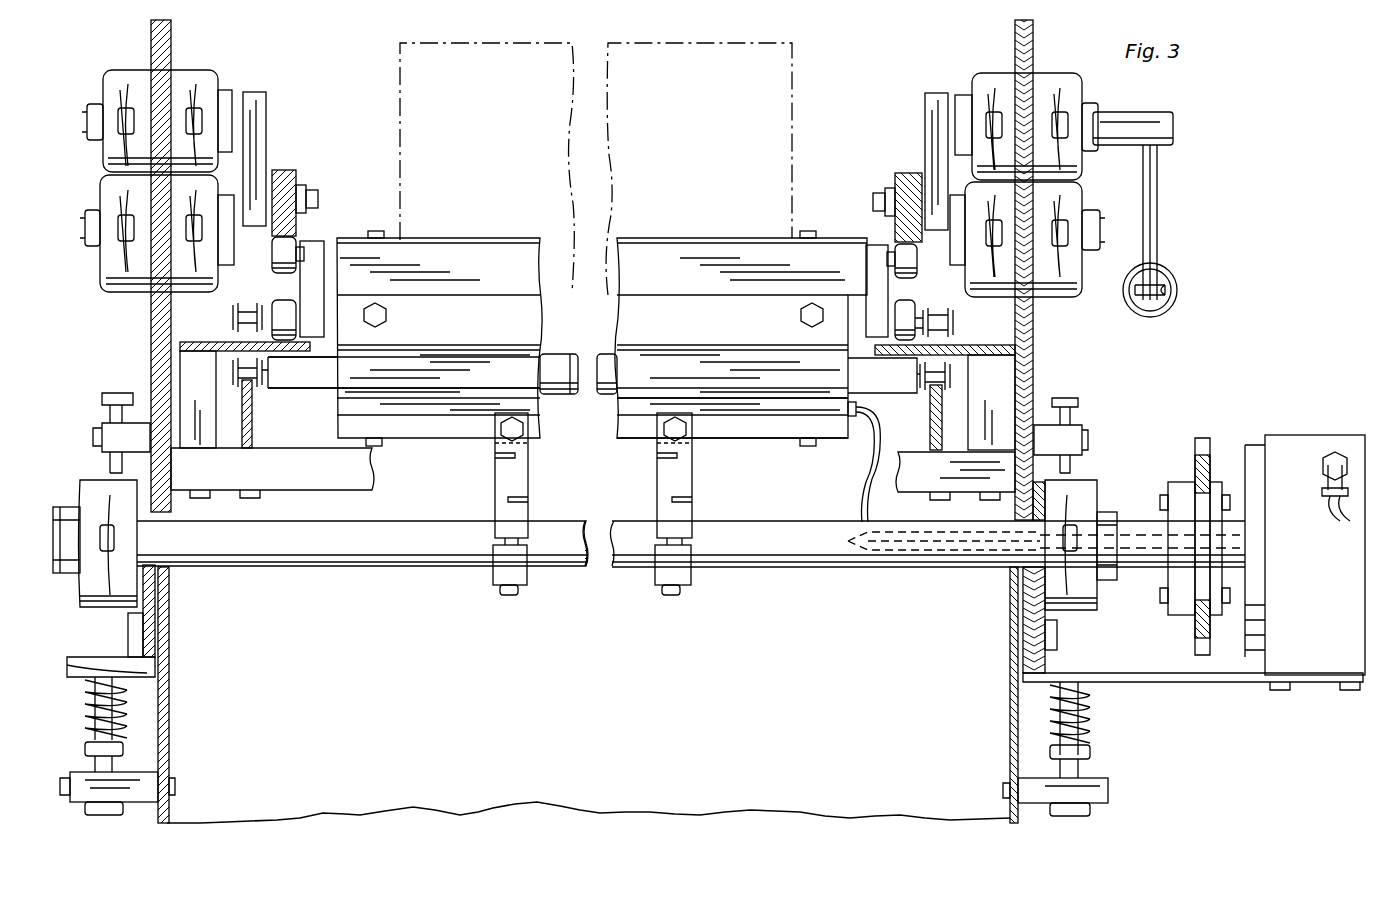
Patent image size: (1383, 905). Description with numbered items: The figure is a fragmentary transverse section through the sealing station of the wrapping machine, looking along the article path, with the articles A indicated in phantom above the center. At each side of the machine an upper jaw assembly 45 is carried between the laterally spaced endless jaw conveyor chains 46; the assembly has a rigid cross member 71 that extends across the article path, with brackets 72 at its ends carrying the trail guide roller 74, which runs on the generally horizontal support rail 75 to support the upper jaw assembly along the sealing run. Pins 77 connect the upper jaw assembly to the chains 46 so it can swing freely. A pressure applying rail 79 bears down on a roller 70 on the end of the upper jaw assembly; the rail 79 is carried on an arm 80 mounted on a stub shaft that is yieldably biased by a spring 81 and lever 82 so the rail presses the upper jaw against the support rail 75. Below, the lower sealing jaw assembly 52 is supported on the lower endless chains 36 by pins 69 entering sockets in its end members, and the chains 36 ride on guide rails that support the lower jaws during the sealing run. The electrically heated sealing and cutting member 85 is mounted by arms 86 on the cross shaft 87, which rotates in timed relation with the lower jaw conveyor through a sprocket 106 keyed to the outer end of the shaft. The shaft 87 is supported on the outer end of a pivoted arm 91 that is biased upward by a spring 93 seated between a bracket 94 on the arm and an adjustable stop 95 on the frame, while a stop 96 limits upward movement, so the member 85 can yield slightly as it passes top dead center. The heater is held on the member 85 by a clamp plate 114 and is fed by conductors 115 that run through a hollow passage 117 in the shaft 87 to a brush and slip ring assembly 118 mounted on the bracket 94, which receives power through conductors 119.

The lower endless chains 36 is at (230, 375).
The upper jaw assemblies 45 is at (695, 236).
The endless jaw conveyor chains 46 is at (954, 322).
The lower sealing jaw assemblies 52 is at (324, 400).
The pins 69 is at (264, 386).
The rollers 70 is at (278, 252).
The cross member 71 is at (430, 250).
The brackets 72 is at (318, 242).
The trail guide roller 74 is at (292, 348).
The support rails 75 is at (232, 342).
The pins 77 is at (270, 318).
The pressure applying rails 79 is at (282, 180).
The arms 80 is at (258, 135).
The springs 81 is at (1175, 280).
The levers 82 is at (1113, 122).
The heat sealing and cutting member 85 is at (750, 450).
The arms 86 is at (664, 477).
The cross shaft 87 is at (759, 550).
The arm 91 is at (1053, 608).
The spring 93 is at (1092, 716).
The bracket 94 is at (1175, 674).
The adjustable stop 95 is at (1092, 750).
The stop 96 is at (1075, 470).
The sprocket 106 is at (1200, 440).
The clamp plate 114 is at (832, 428).
The conductors 115 is at (868, 492).
The hollow passage 117 is at (893, 556).
The brush and slip ring assembly 118 is at (1293, 433).
The conductors 119 is at (1333, 512).
The articles A is at (792, 95).